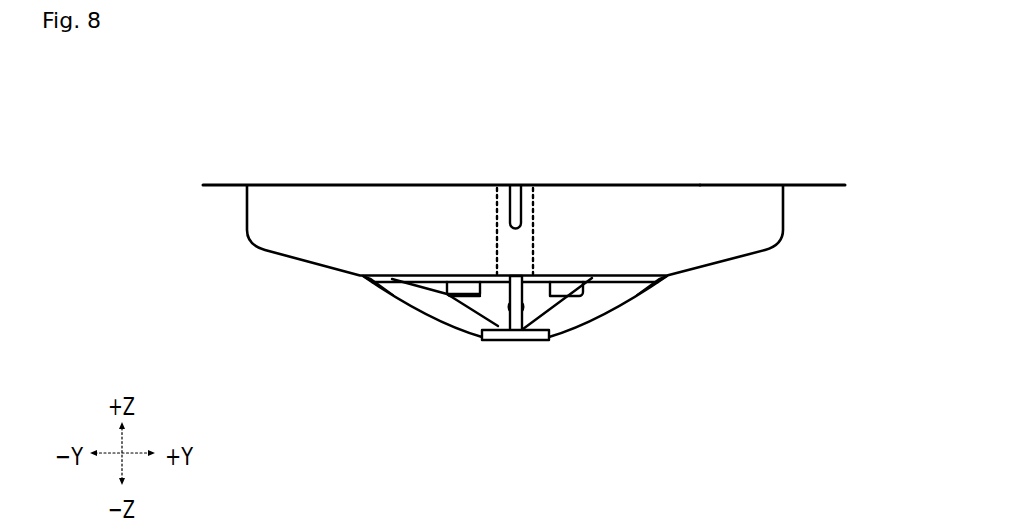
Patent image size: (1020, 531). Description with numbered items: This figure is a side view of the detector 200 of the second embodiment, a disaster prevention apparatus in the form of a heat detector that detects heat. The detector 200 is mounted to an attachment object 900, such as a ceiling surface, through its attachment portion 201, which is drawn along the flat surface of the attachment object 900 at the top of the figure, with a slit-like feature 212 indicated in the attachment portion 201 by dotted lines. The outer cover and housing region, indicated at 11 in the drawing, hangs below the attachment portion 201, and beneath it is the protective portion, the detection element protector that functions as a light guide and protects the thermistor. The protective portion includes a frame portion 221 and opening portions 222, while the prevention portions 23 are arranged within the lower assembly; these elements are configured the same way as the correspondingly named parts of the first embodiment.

The housing 11 is at (280, 257).
The detector 200 is at (721, 342).
The attachment portion 201 is at (641, 184).
The slit 212 is at (498, 198).
The frame portion 221 is at (575, 317).
The opening portions 222 is at (483, 307).
The prevention portions 23 is at (447, 293).
The attachment object 900 is at (815, 187).